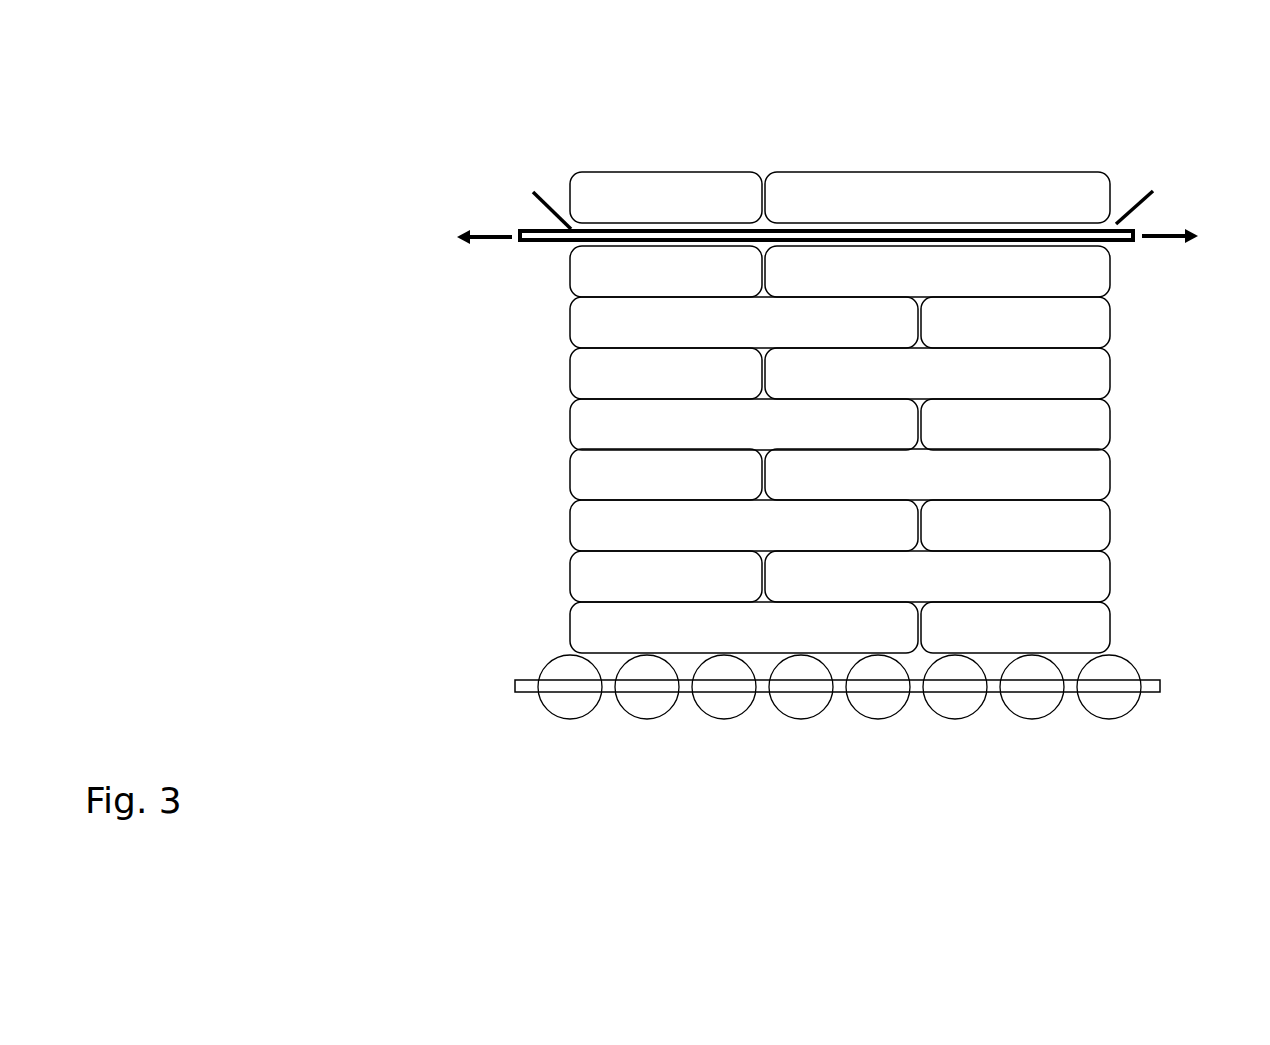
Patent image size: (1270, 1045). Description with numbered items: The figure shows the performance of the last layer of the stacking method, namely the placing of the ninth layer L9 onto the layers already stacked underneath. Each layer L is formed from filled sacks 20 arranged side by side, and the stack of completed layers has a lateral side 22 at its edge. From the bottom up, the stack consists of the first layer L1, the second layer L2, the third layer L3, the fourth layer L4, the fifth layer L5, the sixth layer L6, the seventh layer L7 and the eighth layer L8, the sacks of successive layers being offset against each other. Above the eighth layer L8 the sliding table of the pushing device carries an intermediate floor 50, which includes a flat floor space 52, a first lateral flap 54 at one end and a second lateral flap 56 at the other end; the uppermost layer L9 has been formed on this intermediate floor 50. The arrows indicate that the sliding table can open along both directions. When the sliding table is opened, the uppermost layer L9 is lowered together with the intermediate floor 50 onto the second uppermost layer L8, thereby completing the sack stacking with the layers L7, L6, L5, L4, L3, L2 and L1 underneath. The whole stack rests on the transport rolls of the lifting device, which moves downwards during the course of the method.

The filled sack 20 is at (707, 183).
The lateral side 22 is at (1112, 327).
The intermediate floor 50 is at (533, 209).
The floor space 52 is at (887, 232).
The first lateral flap 54 is at (548, 196).
The second lateral flap 56 is at (1137, 208).
The layer L is at (1023, 155).
The first layer L1 is at (573, 628).
The second layer L2 is at (573, 574).
The third layer L3 is at (573, 520).
The fourth layer L4 is at (573, 470).
The fifth layer L5 is at (573, 415).
The sixth layer L6 is at (573, 362).
The seventh layer L7 is at (573, 325).
The eighth layer L8 is at (573, 272).
The ninth layer L9 is at (1097, 197).